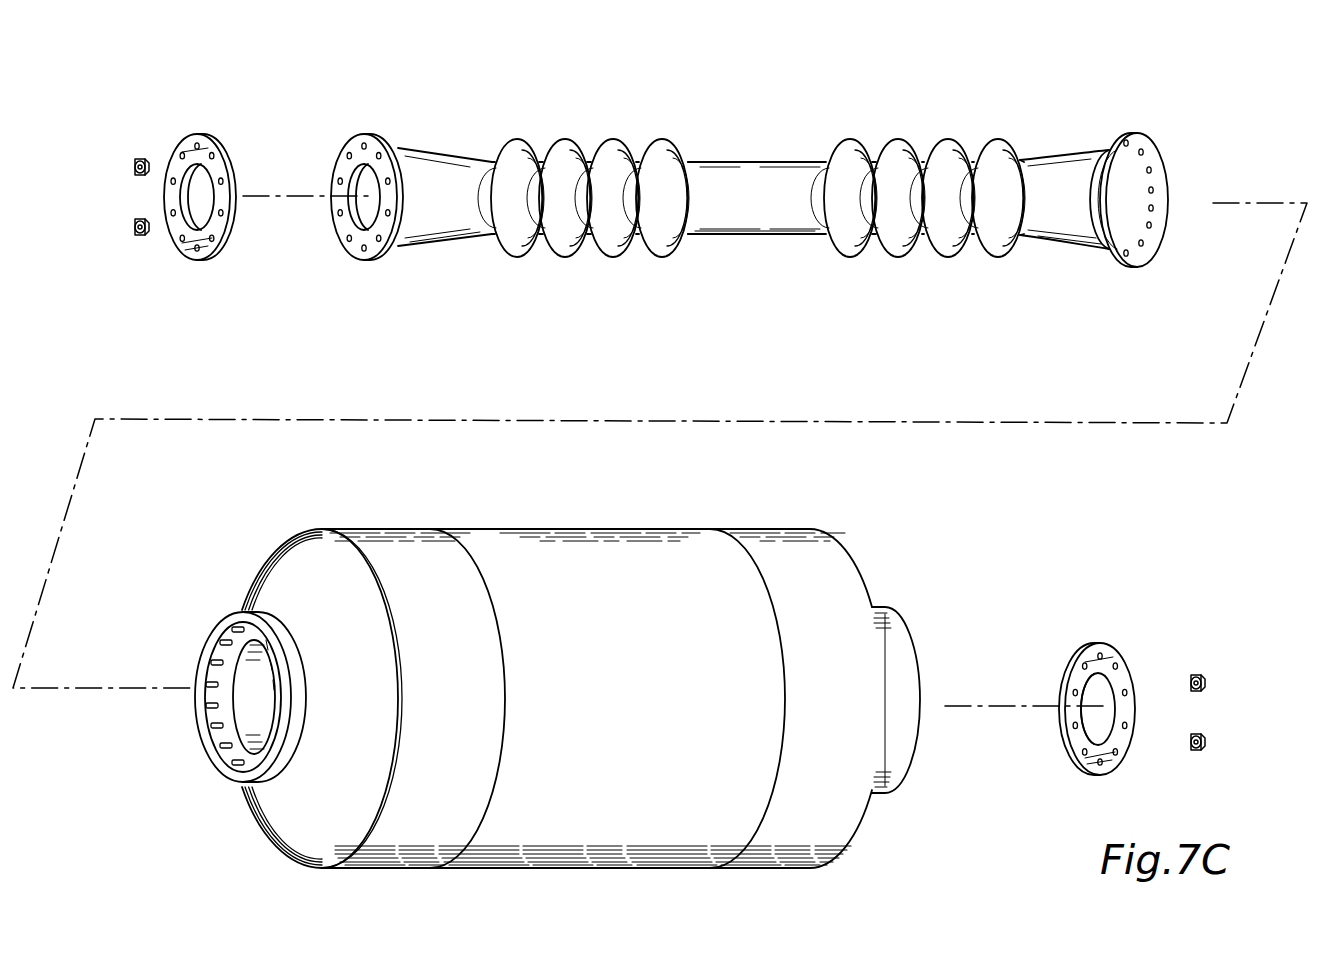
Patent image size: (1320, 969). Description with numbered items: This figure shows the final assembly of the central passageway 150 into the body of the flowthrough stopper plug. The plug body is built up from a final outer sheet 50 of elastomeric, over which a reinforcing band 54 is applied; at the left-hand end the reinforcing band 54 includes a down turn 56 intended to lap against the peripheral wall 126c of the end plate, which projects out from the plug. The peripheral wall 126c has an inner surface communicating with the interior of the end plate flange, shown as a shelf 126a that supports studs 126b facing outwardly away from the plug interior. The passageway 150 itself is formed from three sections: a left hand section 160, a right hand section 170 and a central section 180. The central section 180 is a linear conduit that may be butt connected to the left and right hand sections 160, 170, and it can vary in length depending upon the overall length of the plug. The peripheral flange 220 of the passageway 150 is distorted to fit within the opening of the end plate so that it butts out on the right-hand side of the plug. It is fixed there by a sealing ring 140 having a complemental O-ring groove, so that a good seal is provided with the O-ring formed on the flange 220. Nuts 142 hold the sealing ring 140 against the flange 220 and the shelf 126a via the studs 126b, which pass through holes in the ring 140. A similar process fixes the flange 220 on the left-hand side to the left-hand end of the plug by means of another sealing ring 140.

The final outer sheet of elastomeric 50 is at (548, 698).
The reinforcing band 54 is at (633, 698).
The down turn 56 is at (286, 798).
The shelf 126a is at (238, 690).
The studs 126b is at (218, 747).
The peripheral wall 126c is at (246, 612).
The sealing ring 140 is at (167, 117).
The nuts 142 is at (135, 173).
The central passageway 150 is at (711, 84).
The left hand section 160 is at (557, 273).
The right hand section 170 is at (916, 134).
The central section 180 is at (754, 248).
The peripheral flange 220 is at (351, 148).